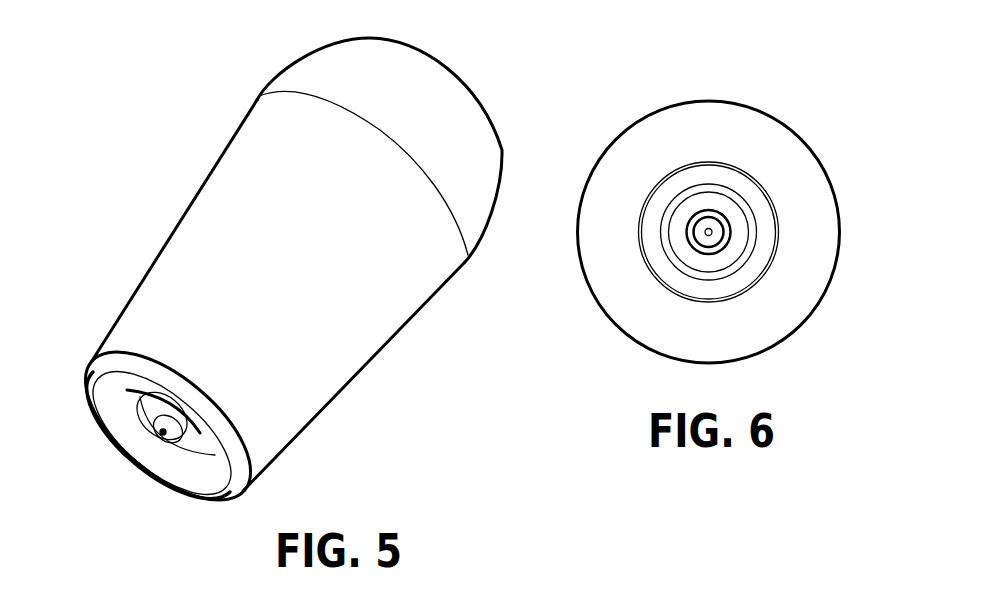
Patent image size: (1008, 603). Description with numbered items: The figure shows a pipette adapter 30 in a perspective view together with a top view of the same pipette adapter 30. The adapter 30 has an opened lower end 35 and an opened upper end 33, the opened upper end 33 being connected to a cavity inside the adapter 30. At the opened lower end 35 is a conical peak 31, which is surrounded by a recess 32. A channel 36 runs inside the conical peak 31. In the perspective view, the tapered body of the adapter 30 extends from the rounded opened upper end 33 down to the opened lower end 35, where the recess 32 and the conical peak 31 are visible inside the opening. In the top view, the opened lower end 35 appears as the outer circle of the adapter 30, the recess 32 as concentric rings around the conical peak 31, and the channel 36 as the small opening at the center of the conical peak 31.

In FIG. 5, the pipette adapter 30 is at (198, 198).
In FIG. 6, the pipette adapter 30 is at (625, 160).
In FIG. 5, the conical peak 31 is at (163, 430).
In FIG. 6, the conical peak 31 is at (690, 238).
In FIG. 5, the recess 32 is at (145, 403).
In FIG. 6, the recess 32 is at (745, 260).
In FIG. 5, the opened upper end 33 is at (438, 63).
In FIG. 5, the opened lower end 35 is at (275, 457).
In FIG. 6, the channel 36 is at (723, 225).